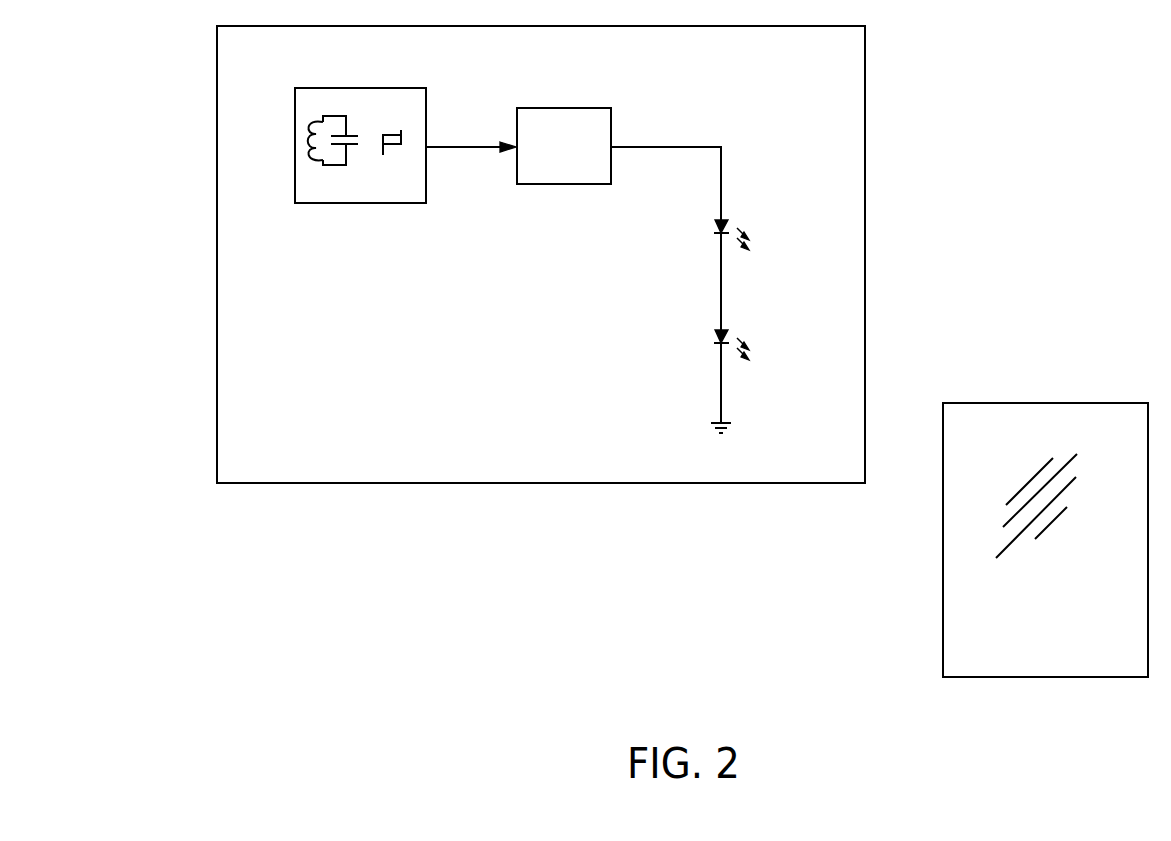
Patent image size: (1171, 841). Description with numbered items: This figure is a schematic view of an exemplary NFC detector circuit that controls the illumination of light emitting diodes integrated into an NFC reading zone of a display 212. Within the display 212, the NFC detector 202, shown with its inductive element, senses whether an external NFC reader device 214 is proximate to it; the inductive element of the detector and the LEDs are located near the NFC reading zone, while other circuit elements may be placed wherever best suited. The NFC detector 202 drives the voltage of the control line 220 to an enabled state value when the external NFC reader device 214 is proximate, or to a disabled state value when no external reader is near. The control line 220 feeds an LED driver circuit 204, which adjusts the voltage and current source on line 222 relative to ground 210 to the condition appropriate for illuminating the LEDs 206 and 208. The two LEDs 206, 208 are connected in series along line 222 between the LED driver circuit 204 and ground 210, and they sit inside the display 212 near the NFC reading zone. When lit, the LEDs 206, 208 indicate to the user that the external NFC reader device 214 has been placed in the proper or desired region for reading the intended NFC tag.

The NFC detector 202 is at (410, 88).
The LED driver circuit 204 is at (572, 108).
The LED 206 is at (720, 224).
The LED 208 is at (720, 334).
The ground 210 is at (720, 423).
The display 212 is at (217, 277).
The external NFC reader device 214 is at (943, 590).
The control line 220 is at (483, 148).
The line 222 is at (698, 147).